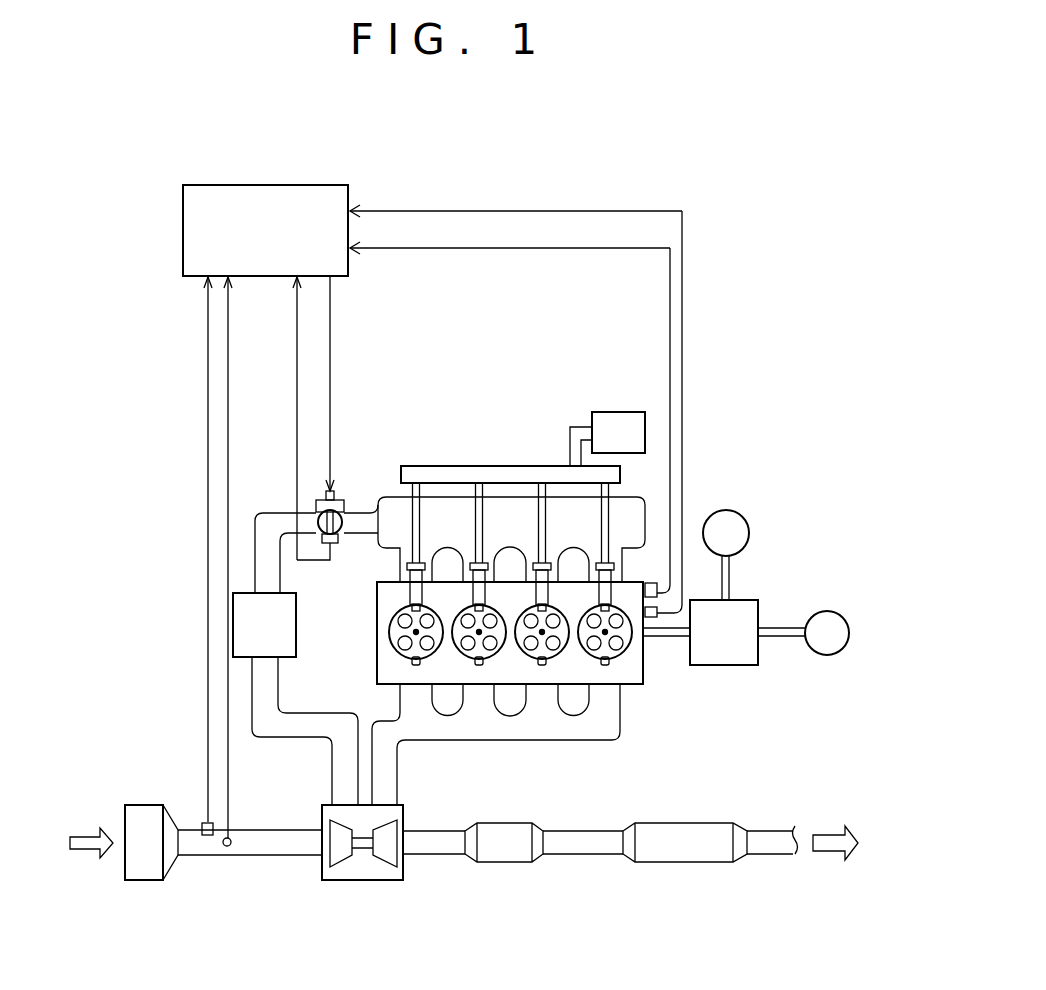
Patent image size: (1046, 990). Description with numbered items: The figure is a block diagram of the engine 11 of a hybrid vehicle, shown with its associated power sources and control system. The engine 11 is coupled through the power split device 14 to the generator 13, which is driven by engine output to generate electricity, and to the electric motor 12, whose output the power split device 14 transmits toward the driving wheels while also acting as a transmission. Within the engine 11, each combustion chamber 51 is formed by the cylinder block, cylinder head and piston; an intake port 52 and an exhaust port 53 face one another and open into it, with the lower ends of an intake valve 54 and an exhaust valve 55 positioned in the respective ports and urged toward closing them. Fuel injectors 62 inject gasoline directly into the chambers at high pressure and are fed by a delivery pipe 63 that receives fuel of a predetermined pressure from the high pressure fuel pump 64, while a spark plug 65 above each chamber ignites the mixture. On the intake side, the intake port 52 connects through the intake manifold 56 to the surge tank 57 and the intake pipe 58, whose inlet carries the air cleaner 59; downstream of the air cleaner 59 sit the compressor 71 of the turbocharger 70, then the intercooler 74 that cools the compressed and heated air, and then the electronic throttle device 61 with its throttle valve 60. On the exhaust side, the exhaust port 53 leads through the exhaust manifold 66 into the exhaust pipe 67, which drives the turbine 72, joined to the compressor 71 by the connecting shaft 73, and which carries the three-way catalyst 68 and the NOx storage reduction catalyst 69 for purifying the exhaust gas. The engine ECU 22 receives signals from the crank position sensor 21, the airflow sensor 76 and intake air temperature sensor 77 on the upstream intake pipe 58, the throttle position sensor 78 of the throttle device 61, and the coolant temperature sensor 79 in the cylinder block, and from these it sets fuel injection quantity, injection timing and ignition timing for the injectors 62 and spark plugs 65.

The engine 11 is at (659, 680).
The electric motor 12 is at (838, 618).
The generator 13 is at (761, 533).
The power split device 14 is at (750, 588).
The crank position sensor 21 is at (655, 583).
The engine ECU 22 is at (325, 184).
The combustion chamber 51 is at (416, 634).
The intake port 52 is at (395, 598).
The exhaust port 53 is at (405, 673).
The intake valve 54 is at (392, 624).
The exhaust valve 55 is at (403, 643).
The intake manifold 56 is at (632, 560).
The surge tank 57 is at (631, 497).
The intake pipe 58 is at (262, 558).
The air cleaner 59 is at (136, 805).
The throttle valve 60 is at (339, 522).
The electronic throttle device 61 is at (340, 502).
The fuel injector 62 is at (426, 600).
The delivery pipe 63 is at (465, 472).
The high pressure fuel pump 64 is at (613, 412).
The spark plug 65 is at (426, 647).
The exhaust manifold 66 is at (620, 742).
The exhaust pipe 67 is at (437, 855).
The three-way catalyst 68 is at (505, 862).
The NOx storage reduction catalyst 69 is at (685, 862).
The turbocharger 70 is at (342, 893).
The compressor 71 is at (338, 852).
The turbine 72 is at (392, 868).
The connecting shaft 73 is at (368, 848).
The intercooler 74 is at (285, 652).
The airflow sensor 76 is at (231, 838).
The intake air temperature sensor 77 is at (207, 822).
The throttle position sensor 78 is at (339, 540).
The coolant temperature sensor 79 is at (655, 620).